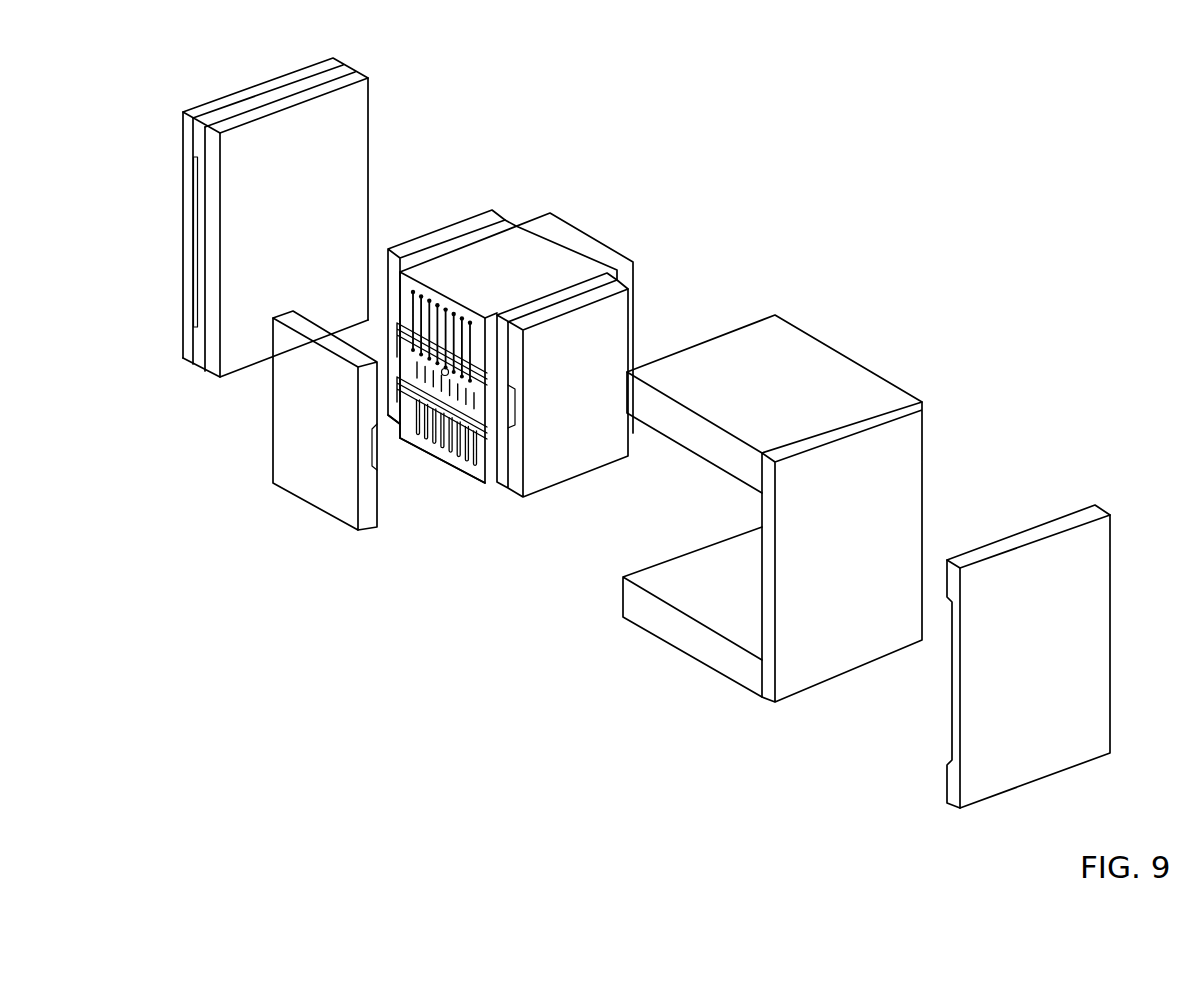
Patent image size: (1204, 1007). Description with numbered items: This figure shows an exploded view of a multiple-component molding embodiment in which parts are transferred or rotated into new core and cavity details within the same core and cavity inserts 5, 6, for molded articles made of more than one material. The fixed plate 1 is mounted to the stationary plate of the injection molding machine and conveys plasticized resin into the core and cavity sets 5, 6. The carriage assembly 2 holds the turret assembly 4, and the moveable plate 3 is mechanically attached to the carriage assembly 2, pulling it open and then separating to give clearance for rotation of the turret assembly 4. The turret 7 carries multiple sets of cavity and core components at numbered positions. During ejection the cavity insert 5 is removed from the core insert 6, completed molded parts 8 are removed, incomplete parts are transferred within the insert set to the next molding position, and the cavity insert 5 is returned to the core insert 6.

The fixed plate 1 is at (247, 103).
The carriage assembly 2 is at (850, 358).
The moveable plate 3 is at (1105, 513).
The turret assembly 4 is at (617, 243).
The cavity insert 5 is at (358, 530).
The core insert 6 is at (485, 485).
The turret 7 is at (468, 262).
The molded parts 8 is at (437, 447).